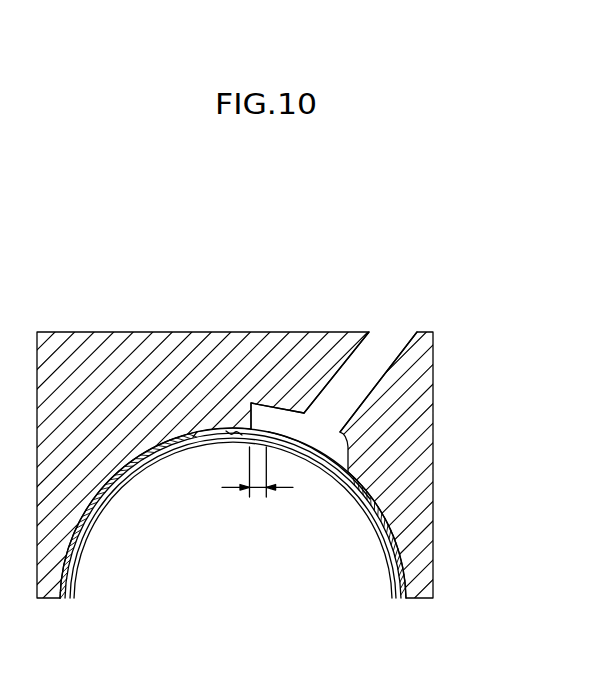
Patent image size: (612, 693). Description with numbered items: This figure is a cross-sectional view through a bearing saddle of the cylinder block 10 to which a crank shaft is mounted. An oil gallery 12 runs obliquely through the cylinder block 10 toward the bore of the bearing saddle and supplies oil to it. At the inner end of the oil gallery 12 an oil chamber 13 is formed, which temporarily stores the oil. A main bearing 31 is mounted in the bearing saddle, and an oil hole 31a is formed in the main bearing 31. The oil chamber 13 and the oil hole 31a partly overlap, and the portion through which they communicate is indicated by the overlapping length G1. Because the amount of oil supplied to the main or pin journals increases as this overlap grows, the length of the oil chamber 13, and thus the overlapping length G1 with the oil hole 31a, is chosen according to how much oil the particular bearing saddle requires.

The cylinder block 10 is at (132, 360).
The oil gallery 12 is at (352, 375).
The oil chamber 13 is at (283, 418).
The main bearing 31 is at (117, 480).
The oil hole 31a is at (233, 434).
The overlapping length G1 is at (257, 488).